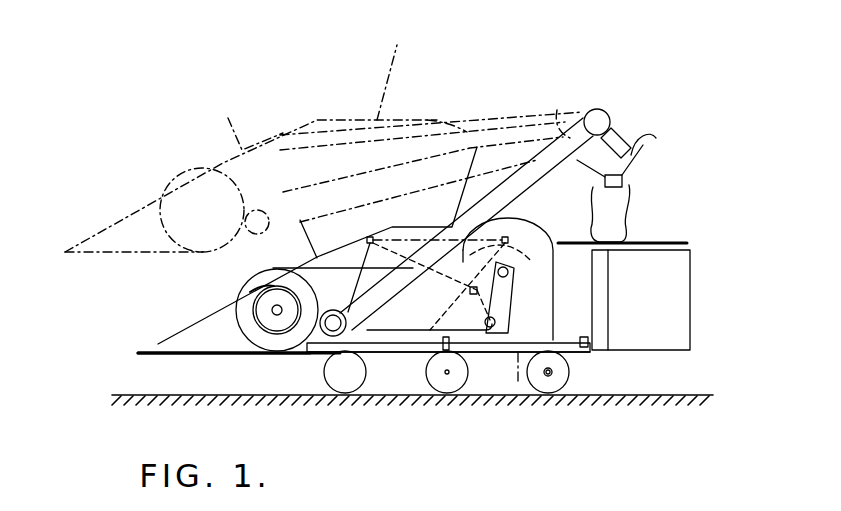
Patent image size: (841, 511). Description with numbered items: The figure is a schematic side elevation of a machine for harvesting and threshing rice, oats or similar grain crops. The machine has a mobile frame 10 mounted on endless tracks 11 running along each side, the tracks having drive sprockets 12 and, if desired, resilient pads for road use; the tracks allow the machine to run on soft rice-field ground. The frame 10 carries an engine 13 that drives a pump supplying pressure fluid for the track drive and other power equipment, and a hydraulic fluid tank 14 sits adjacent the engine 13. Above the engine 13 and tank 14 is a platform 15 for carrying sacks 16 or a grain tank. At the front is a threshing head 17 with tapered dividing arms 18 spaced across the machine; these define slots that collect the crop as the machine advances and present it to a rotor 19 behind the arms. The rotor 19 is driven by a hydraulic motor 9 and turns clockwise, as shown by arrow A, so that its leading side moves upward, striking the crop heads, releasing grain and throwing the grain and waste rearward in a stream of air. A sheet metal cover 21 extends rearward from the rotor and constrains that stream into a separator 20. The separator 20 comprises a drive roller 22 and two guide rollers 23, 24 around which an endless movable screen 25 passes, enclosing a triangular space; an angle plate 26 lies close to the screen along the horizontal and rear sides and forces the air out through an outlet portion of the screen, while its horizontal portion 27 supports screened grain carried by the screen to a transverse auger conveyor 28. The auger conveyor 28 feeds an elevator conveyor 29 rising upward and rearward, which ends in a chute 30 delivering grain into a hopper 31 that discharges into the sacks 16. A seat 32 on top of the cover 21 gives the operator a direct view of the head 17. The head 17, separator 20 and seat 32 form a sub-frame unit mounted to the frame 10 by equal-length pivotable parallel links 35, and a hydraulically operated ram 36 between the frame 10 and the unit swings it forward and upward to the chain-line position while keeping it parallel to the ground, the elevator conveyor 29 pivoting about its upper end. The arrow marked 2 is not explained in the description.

The direction of travel 2 is at (668, 165).
The hydraulic motor 9 is at (272, 315).
The mobile frame 10 is at (494, 362).
The endless tracks 11 is at (558, 378).
The drive sprockets 12 is at (330, 383).
The engine 13 is at (660, 337).
The tank 14 is at (602, 347).
The platform 15 is at (663, 247).
The sacks 16 is at (637, 203).
The threshing head 17 is at (207, 360).
The tapered dividing arms 18 is at (160, 343).
The rotor 19 is at (237, 318).
The separator 20 is at (390, 360).
The sheet metal cover 21 is at (298, 267).
The drive roller 22 is at (367, 333).
The guide roller 23 is at (508, 272).
The guide roller 24 is at (496, 321).
The endless movable screen 25 is at (484, 268).
The angle plate 26 is at (524, 304).
The horizontal portion 27 is at (423, 330).
The auger conveyor 28 is at (328, 333).
The elevator conveyor 29 is at (510, 176).
The chute 30 is at (618, 132).
The hopper 31 is at (645, 142).
The seat 32 is at (468, 165).
The pivotable parallel links 35 is at (414, 350).
The hydraulically operated ram 36 is at (517, 400).
The arrow A is at (250, 302).